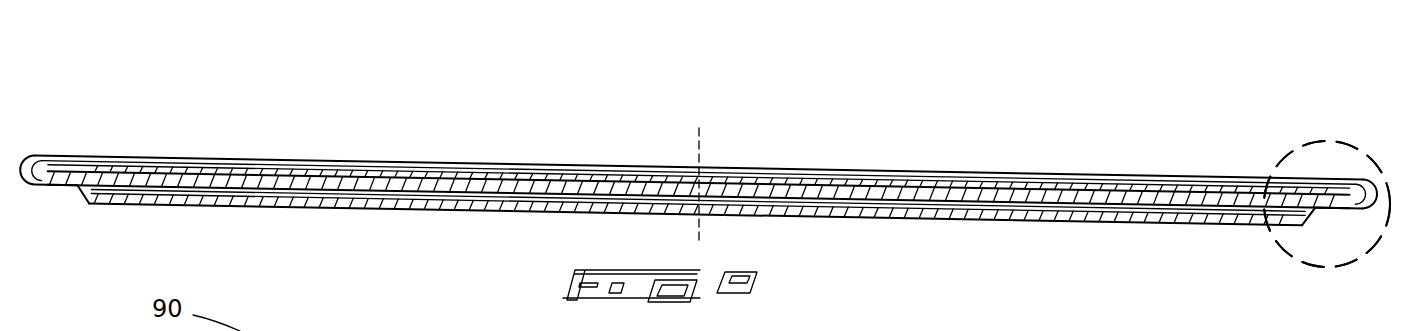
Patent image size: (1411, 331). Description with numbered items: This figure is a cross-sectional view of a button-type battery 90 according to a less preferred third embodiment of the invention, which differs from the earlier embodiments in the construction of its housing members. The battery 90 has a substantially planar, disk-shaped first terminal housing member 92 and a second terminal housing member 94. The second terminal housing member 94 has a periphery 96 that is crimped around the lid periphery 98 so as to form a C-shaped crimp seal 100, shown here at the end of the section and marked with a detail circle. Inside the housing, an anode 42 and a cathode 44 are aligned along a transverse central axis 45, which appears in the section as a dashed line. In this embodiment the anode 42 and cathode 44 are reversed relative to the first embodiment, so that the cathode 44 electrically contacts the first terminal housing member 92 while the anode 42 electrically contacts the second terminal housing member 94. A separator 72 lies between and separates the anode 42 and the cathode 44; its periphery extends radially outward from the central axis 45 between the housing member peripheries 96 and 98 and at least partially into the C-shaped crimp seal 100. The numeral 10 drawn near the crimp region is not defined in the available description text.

The absorbent article 10 is at (1297, 262).
The anode 42 is at (980, 217).
The cathode 44 is at (921, 183).
The transverse central axis 45 is at (699, 130).
The separator 72 is at (977, 182).
The button-type battery 90 is at (478, 153).
The first terminal housing member 92 is at (644, 170).
The second terminal housing member 94 is at (850, 219).
The periphery of second terminal housing member 96 is at (1343, 206).
The lid periphery 98 is at (1334, 178).
The C-shaped crimp seal 100 is at (1361, 160).